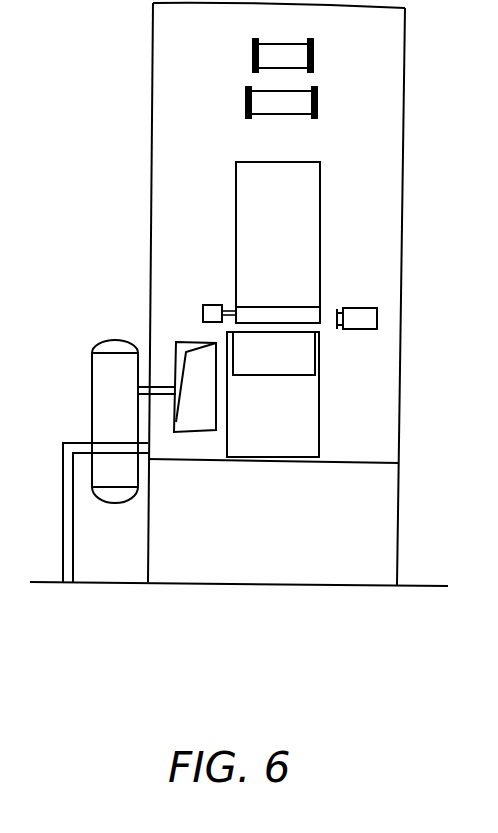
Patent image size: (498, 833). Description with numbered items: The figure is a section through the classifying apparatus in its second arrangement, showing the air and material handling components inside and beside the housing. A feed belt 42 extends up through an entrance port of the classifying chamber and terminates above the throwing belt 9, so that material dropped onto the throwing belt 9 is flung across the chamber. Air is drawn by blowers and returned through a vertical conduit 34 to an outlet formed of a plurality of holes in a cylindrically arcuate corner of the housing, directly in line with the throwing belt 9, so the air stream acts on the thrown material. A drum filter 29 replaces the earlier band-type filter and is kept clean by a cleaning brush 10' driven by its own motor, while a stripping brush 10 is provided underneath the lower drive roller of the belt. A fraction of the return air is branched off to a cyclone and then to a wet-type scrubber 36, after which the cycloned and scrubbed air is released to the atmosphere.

The feed belt 42 is at (292, 52).
The throwing belt 9 is at (317, 100).
The drum filter 29 is at (317, 221).
The stripping brush 10 is at (220, 292).
The cleaning brush 10' is at (197, 299).
The vertical conduit 34 is at (192, 408).
The wet-type scrubber 36 is at (101, 395).